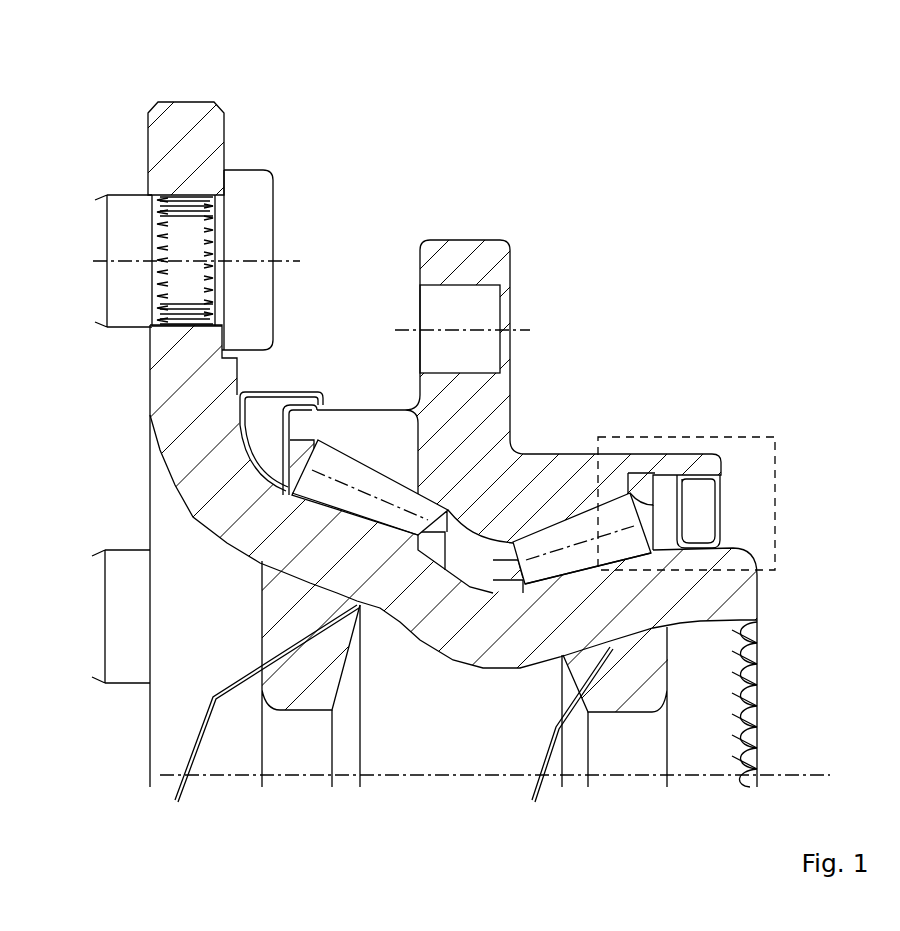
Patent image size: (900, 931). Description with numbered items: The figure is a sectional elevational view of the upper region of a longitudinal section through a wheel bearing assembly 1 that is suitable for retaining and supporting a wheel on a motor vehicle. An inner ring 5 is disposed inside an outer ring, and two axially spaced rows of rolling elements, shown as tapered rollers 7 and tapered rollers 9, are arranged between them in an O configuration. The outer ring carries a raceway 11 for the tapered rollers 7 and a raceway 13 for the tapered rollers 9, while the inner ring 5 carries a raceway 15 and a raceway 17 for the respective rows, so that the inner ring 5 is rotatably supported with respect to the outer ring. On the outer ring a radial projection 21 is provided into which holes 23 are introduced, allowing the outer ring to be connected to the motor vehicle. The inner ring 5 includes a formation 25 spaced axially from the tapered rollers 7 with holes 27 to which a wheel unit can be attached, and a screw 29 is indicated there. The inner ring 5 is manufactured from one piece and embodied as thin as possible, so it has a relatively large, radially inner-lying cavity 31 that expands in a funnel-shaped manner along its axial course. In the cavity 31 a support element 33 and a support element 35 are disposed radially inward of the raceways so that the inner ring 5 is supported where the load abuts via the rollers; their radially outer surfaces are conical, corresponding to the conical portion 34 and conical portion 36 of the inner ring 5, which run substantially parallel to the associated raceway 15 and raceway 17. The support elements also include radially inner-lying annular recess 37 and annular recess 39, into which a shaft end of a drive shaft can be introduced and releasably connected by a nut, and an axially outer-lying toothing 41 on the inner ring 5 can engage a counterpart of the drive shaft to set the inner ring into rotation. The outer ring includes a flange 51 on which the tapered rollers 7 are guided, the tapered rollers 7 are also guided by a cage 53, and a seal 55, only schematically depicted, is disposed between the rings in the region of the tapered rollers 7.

The wheel bearing assembly 1 is at (565, 160).
The inner ring 5 is at (172, 418).
The tapered rollers 7 is at (340, 510).
The tapered rollers 9 is at (571, 566).
The raceway 11 is at (360, 445).
The raceway 13 is at (541, 522).
The raceway 15 is at (380, 545).
The raceway 17 is at (548, 600).
The radial projection 21 is at (452, 256).
The holes 23 is at (490, 312).
The formation 25 is at (185, 110).
The holes 27 is at (147, 192).
The screw 29 is at (116, 233).
The cavity 31 is at (140, 534).
The support element 33 is at (277, 702).
The conical portion 34 is at (257, 726).
The support element 35 is at (630, 704).
The conical portion 36 is at (563, 748).
The annular recess 37 is at (320, 752).
The annular recess 39 is at (598, 752).
The toothing 41 is at (753, 620).
The flange 51 is at (298, 425).
The cage 53 is at (437, 520).
The seal 55 is at (270, 393).